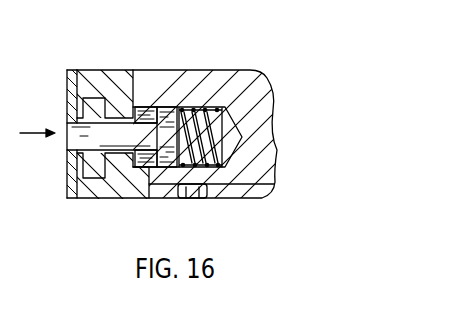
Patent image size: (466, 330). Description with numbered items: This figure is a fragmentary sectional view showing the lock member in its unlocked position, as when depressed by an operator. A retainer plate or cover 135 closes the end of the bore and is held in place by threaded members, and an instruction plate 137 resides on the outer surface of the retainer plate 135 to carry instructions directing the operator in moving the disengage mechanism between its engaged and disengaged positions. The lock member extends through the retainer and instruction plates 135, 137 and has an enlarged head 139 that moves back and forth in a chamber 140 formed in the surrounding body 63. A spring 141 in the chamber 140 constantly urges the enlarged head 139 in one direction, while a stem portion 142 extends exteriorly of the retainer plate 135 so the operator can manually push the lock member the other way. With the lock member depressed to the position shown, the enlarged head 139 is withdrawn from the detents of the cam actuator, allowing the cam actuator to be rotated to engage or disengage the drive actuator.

The body 63 is at (262, 108).
The retainer plate 135 is at (100, 74).
The instruction plate 137 is at (70, 90).
The enlarged head 139 is at (165, 110).
The chamber 140 is at (237, 120).
The spring 141 is at (192, 112).
The stem portion 142 is at (67, 128).